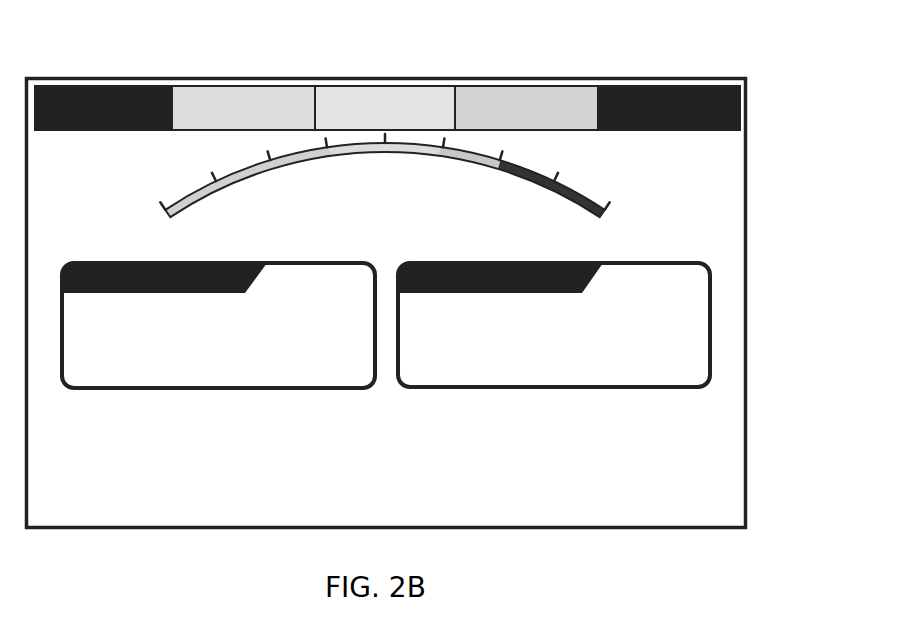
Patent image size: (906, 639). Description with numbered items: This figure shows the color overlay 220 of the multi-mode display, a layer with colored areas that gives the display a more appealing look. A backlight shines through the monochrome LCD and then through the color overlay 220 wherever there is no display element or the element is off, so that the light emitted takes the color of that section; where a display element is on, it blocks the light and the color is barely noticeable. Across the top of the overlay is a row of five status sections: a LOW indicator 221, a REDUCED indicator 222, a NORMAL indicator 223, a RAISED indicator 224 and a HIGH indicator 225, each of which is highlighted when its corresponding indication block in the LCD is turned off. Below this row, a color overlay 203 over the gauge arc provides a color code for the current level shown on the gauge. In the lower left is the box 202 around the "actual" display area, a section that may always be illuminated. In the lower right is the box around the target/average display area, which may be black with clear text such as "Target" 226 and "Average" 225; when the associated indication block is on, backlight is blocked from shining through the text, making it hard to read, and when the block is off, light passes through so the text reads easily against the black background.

The color overlay 220 is at (750, 230).
The LOW indicator 221 is at (160, 96).
The REDUCED indicator 222 is at (306, 96).
The NORMAL indicator 223 is at (448, 96).
The RAISED indicator 224 is at (589, 96).
The HIGH indicator 225 is at (713, 96).
The "Target" text 226 is at (460, 298).
The color overlay over the gauge 203 is at (178, 173).
The box around the actual display area 202 is at (236, 393).